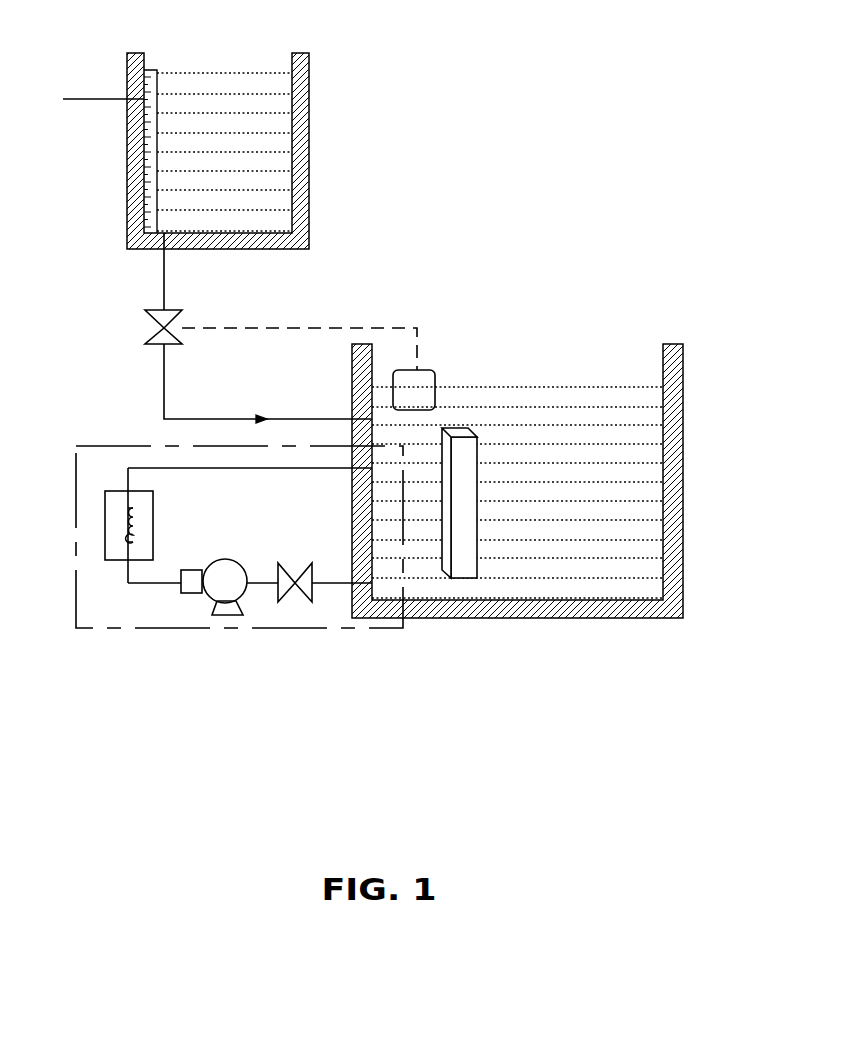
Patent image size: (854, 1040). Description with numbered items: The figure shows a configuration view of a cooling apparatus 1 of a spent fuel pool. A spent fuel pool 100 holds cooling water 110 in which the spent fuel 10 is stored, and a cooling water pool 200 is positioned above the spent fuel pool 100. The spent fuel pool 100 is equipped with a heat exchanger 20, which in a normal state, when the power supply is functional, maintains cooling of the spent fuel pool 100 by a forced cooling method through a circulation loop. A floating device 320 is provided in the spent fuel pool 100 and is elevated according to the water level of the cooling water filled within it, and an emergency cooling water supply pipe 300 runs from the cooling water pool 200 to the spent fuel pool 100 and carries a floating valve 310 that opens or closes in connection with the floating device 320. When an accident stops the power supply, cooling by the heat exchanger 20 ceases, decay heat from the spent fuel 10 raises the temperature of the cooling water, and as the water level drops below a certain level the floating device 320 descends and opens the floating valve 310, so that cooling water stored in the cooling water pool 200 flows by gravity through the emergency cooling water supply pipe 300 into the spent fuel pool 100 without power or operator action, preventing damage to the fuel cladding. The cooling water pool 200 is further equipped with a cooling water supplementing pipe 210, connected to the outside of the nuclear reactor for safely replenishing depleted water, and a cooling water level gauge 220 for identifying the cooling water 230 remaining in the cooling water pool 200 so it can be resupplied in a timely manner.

The cooling apparatus of a spent fuel pool 1 is at (563, 660).
The spent fuel 10 is at (467, 572).
The heat exchanger 20 is at (138, 628).
The spent fuel pool 100 is at (675, 607).
The processing liquid 110 is at (535, 400).
The cooling water pool 200 is at (305, 95).
The cooling water supplementing pipe 210 is at (90, 99).
The cooling water level gauge 220 is at (150, 68).
The cooling water 230 is at (272, 165).
The emergency cooling water supply pipe 300 is at (164, 380).
The floating valve 310 is at (178, 310).
The floating device 320 is at (435, 370).